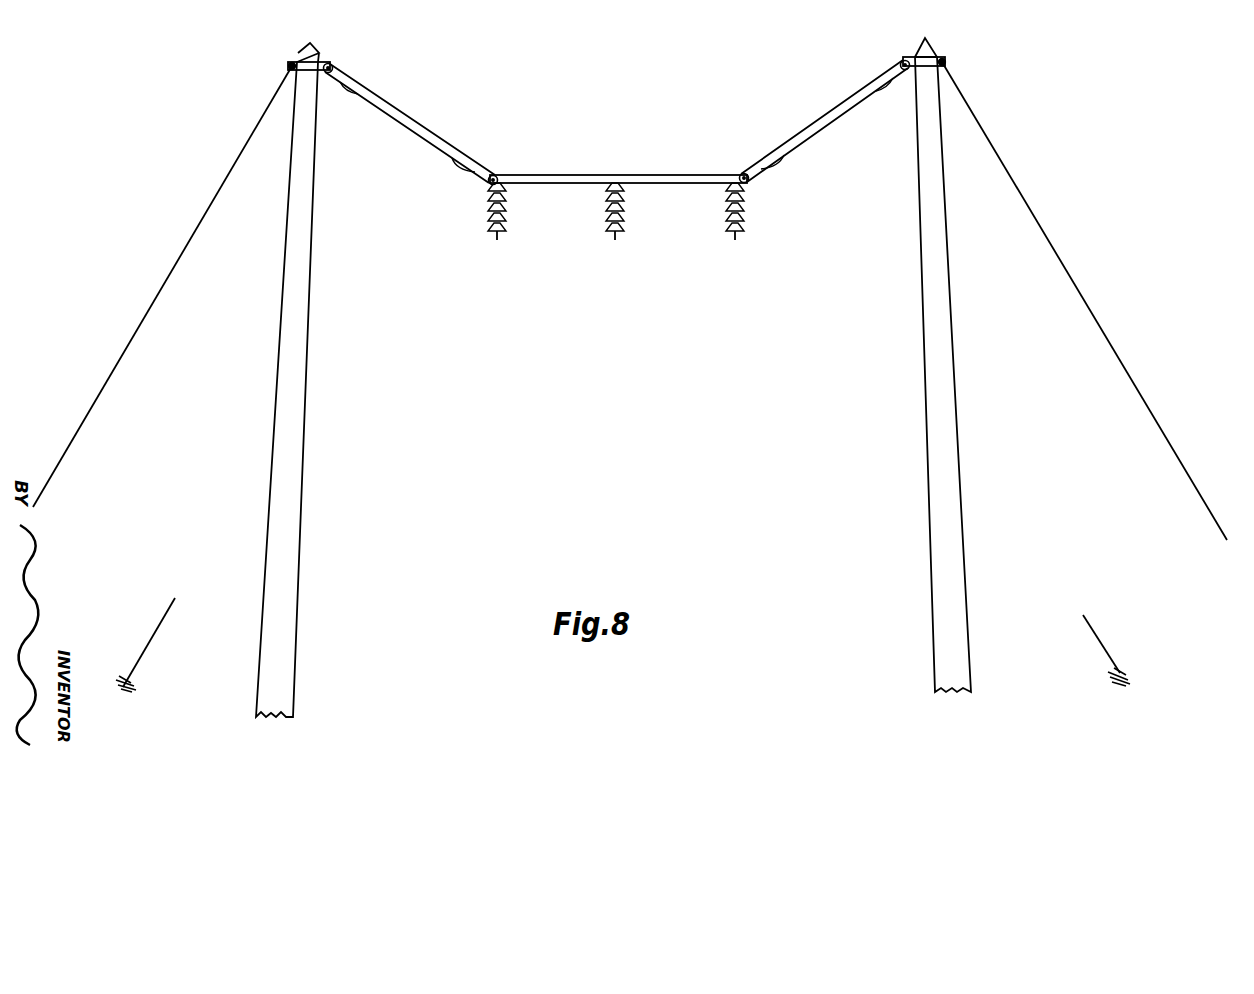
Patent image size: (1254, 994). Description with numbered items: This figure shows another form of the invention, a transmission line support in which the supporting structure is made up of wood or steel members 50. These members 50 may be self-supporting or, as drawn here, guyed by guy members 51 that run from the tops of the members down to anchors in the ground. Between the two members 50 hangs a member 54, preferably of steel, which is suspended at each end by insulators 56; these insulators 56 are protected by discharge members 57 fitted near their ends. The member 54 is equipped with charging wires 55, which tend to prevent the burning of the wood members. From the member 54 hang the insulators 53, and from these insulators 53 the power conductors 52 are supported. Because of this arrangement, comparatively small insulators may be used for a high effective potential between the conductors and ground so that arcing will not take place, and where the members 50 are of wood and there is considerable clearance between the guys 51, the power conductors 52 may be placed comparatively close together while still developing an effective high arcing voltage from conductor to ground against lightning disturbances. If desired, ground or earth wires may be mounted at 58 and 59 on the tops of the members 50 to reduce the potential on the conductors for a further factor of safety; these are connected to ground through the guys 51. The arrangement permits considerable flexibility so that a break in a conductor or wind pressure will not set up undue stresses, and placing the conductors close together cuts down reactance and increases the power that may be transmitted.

The supporting members 50 is at (306, 519).
The guys 51 is at (118, 381).
The power conductors 52 is at (497, 240).
The insulators 53 is at (505, 231).
The member 54 is at (598, 178).
The charging wires 55 is at (572, 156).
The insulators 56 is at (412, 118).
The discharge members 57 is at (352, 83).
The ground wire mounting 58 is at (945, 58).
The ground wire mounting 59 is at (290, 62).